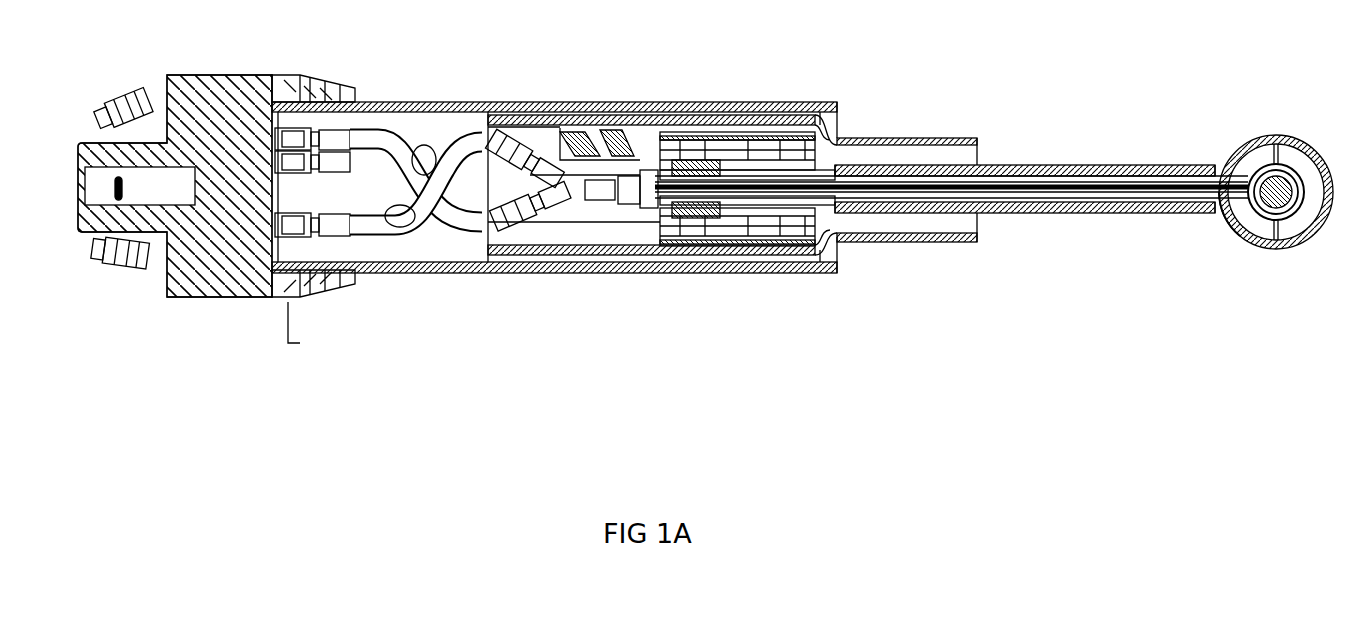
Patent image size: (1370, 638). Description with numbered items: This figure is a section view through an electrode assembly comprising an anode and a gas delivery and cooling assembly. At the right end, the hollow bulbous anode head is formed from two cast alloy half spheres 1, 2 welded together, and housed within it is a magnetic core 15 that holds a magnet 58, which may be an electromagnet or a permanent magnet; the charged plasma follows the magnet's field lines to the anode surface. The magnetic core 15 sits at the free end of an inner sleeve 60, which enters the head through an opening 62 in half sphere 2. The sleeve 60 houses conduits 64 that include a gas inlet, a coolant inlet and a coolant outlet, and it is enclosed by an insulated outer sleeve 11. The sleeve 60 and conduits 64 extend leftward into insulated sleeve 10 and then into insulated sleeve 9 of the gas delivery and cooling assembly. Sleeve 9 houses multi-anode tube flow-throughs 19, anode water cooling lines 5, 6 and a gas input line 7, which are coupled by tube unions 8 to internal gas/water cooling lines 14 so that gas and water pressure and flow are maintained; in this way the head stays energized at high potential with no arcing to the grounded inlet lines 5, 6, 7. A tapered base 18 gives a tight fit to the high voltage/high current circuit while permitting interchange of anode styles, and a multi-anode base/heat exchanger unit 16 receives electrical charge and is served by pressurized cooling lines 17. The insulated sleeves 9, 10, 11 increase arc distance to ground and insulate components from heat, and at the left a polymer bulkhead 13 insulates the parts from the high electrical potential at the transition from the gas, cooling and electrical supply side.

The cast alloy half sphere 1 is at (1318, 232).
The cast alloy half sphere 2 is at (1240, 238).
The anode water cooling line 5 is at (458, 237).
The anode water cooling line 6 is at (600, 200).
The gas input line 7 is at (483, 140).
The tube union 8 is at (115, 93).
The insulated sleeve 9 is at (383, 273).
The insulated sleeve 10 is at (890, 242).
The insulated outer sleeve 11 is at (1040, 217).
The polymer bulkhead 13 is at (213, 302).
The internal gas/water cooling line 14 is at (1135, 176).
The magnetic core 15 is at (1300, 170).
The multi-anode base/heat exchanger unit 16 is at (767, 112).
The pressurized cooling line 17 is at (638, 128).
The tapered base 18 is at (723, 207).
The multi-anode tube flow-through 19 is at (677, 120).
The magnet 58 is at (1275, 185).
The inner sleeve 60 is at (1238, 176).
The opening 62 is at (1228, 205).
The conduits 64 is at (1075, 148).